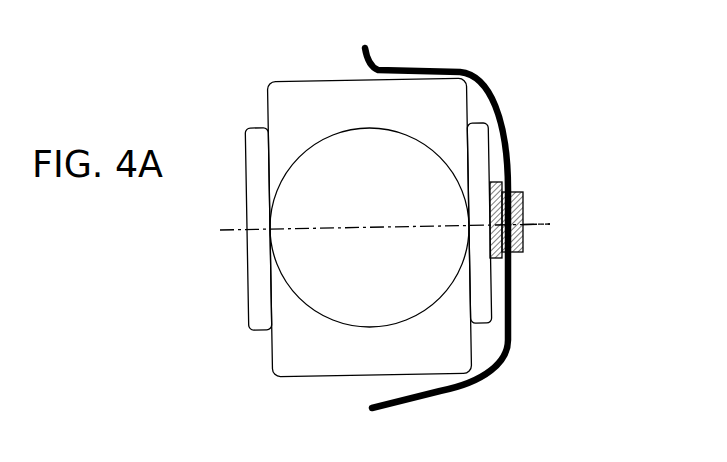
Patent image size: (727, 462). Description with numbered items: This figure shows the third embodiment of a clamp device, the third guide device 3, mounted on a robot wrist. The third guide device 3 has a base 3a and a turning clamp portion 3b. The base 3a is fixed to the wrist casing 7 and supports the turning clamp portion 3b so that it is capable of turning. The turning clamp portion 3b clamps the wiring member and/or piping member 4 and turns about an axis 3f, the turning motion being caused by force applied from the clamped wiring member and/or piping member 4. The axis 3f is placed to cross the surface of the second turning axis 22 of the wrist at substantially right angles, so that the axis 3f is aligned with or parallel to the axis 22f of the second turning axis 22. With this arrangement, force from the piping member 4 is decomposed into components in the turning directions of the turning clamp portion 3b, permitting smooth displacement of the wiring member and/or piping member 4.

The third guide device 3 is at (565, 240).
The base 3a is at (512, 178).
The turning clamp portion 3b is at (528, 190).
The axis 3f is at (537, 225).
The wiring member and/or piping member 4 is at (482, 75).
The wrist casing 7 is at (323, 97).
The second turning axis 22 is at (328, 285).
The axis of the second turning axis 22f is at (233, 235).